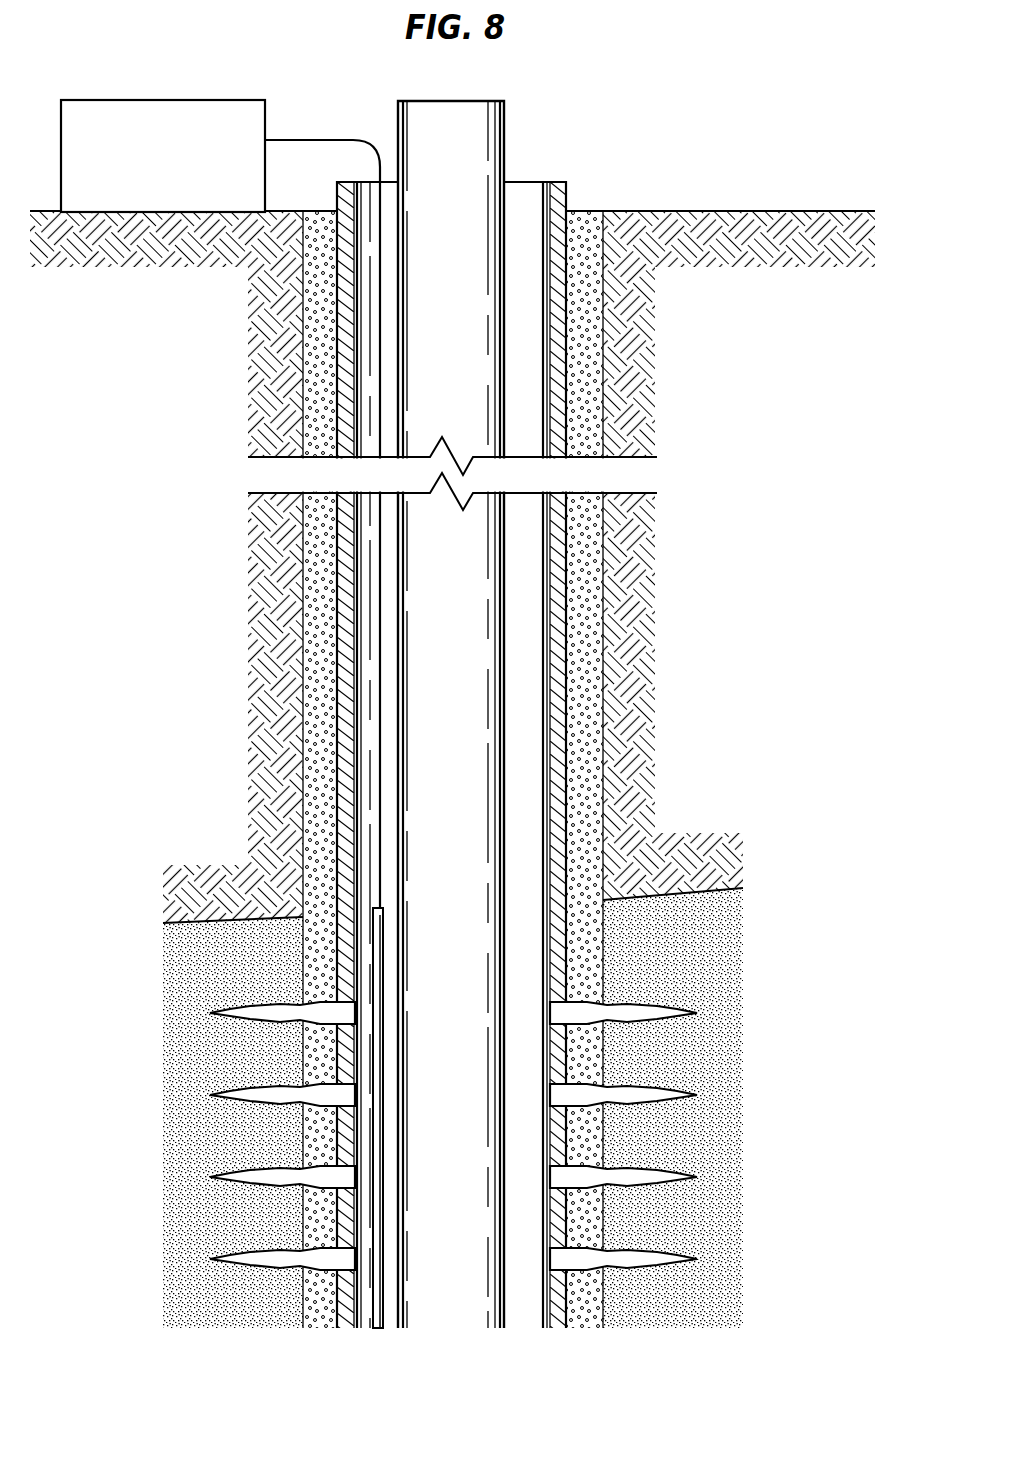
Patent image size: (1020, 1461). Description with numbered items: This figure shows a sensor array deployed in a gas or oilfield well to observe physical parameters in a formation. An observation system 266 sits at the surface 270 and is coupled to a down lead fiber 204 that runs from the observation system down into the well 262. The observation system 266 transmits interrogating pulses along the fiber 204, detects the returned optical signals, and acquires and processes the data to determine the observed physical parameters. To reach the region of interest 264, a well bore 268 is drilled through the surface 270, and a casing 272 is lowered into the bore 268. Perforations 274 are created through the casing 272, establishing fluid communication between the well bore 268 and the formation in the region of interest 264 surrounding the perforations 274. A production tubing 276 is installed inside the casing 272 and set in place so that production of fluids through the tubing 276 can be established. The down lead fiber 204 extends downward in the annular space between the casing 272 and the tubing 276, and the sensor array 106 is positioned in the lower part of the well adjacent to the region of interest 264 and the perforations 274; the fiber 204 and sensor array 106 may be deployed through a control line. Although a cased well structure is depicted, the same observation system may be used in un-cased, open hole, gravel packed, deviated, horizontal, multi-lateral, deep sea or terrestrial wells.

The observation system 266 is at (127, 100).
The down lead fiber 204 is at (288, 140).
The well 262 is at (576, 156).
The surface 270 is at (780, 211).
The well bore 268 is at (600, 334).
The casing 272 is at (565, 387).
The production tubing 276 is at (418, 360).
The region of interest 264 is at (695, 963).
The perforations 274 is at (210, 1095).
The sensor array 106 is at (377, 1200).